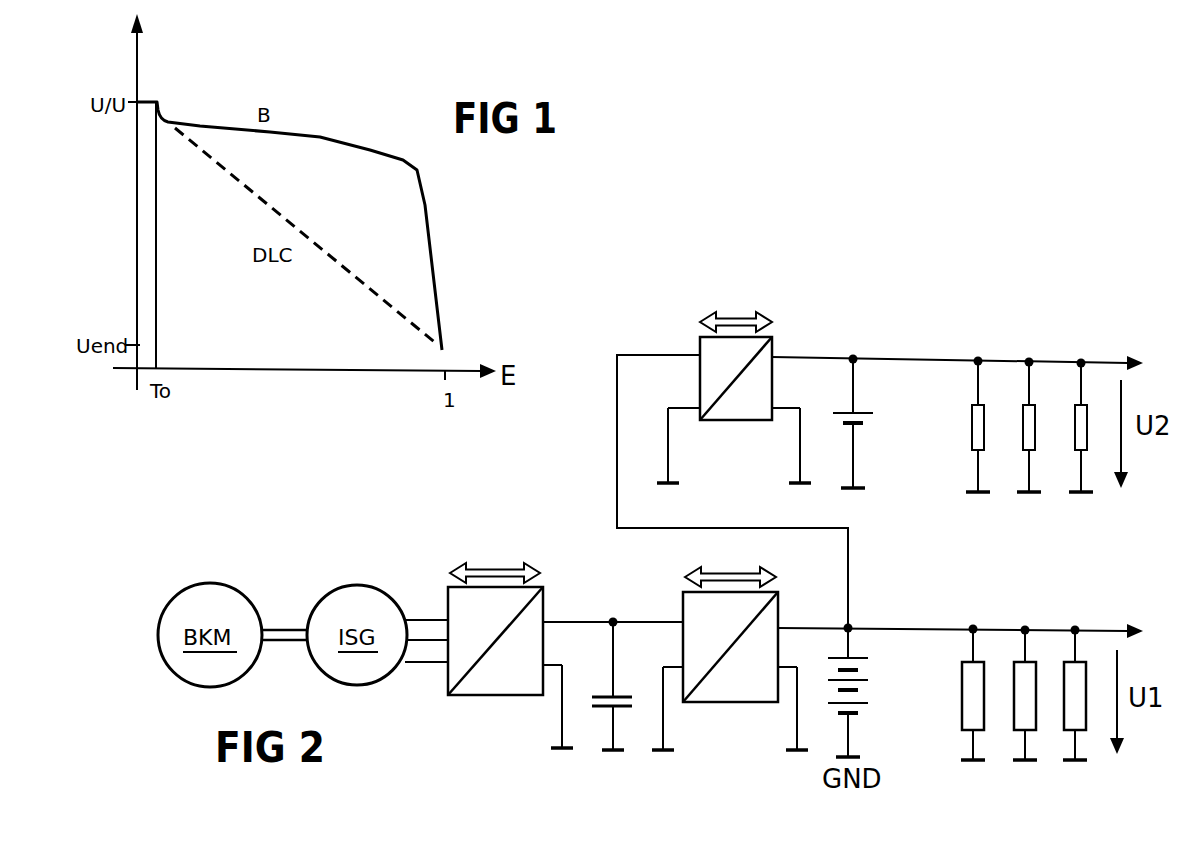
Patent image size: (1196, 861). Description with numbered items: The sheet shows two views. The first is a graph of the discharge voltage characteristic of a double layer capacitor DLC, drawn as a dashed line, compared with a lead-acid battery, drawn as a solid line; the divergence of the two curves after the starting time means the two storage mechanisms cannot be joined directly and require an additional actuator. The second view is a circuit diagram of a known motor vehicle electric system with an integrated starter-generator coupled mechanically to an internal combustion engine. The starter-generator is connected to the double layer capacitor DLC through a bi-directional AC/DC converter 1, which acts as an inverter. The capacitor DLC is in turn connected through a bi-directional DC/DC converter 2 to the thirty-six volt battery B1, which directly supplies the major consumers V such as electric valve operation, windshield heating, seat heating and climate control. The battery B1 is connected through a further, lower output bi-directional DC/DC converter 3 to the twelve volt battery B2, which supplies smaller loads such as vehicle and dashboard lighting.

The bi-directional AC/DC converter 1 is at (501, 697).
The bi-directional DC/DC converter 2 is at (735, 703).
The further bi-directional DC/DC converter 3 is at (737, 421).
The 36 V battery B1 is at (867, 692).
The 12 V battery B2 is at (872, 423).
The double layer capacitor DLC is at (623, 697).
The consumers V is at (1075, 700).